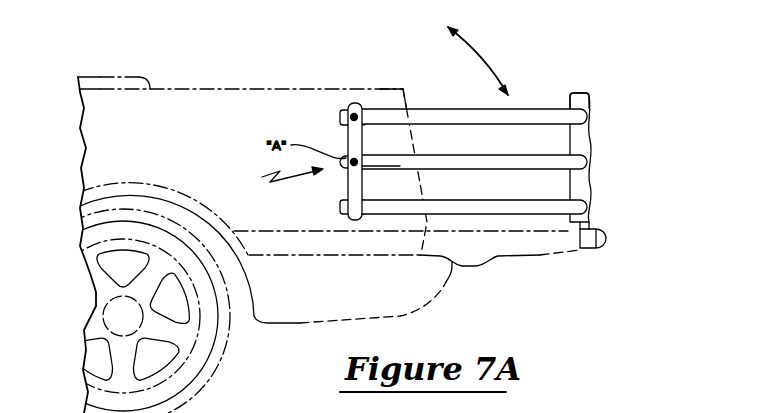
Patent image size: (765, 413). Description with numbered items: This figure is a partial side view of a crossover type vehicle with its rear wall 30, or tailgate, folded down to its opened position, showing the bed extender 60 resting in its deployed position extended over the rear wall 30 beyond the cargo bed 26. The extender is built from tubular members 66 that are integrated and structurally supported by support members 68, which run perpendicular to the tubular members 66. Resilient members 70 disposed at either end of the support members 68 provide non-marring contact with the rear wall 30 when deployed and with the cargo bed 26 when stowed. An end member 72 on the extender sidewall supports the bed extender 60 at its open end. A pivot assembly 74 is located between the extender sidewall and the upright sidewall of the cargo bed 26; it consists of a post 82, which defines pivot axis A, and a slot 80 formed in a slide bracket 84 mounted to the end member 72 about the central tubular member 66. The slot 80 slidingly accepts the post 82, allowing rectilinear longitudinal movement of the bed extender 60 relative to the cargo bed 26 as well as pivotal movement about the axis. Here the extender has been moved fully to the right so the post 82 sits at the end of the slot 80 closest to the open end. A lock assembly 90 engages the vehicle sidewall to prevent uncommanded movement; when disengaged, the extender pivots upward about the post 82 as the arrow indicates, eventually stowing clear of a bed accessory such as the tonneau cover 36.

The cargo bed 26 is at (266, 226).
The rear wall 30 is at (541, 258).
The tonneau cover 36 is at (111, 76).
The bed extender 60 is at (461, 164).
The tubular members 66 is at (462, 107).
The support members 68 is at (591, 138).
The resilient members 70 is at (583, 96).
The end members 72 is at (349, 190).
The pivot assembly 74 is at (275, 175).
The slot 80 is at (395, 160).
The post 82 is at (347, 158).
The slide bracket 84 is at (381, 168).
The lock assembly 90 is at (369, 91).